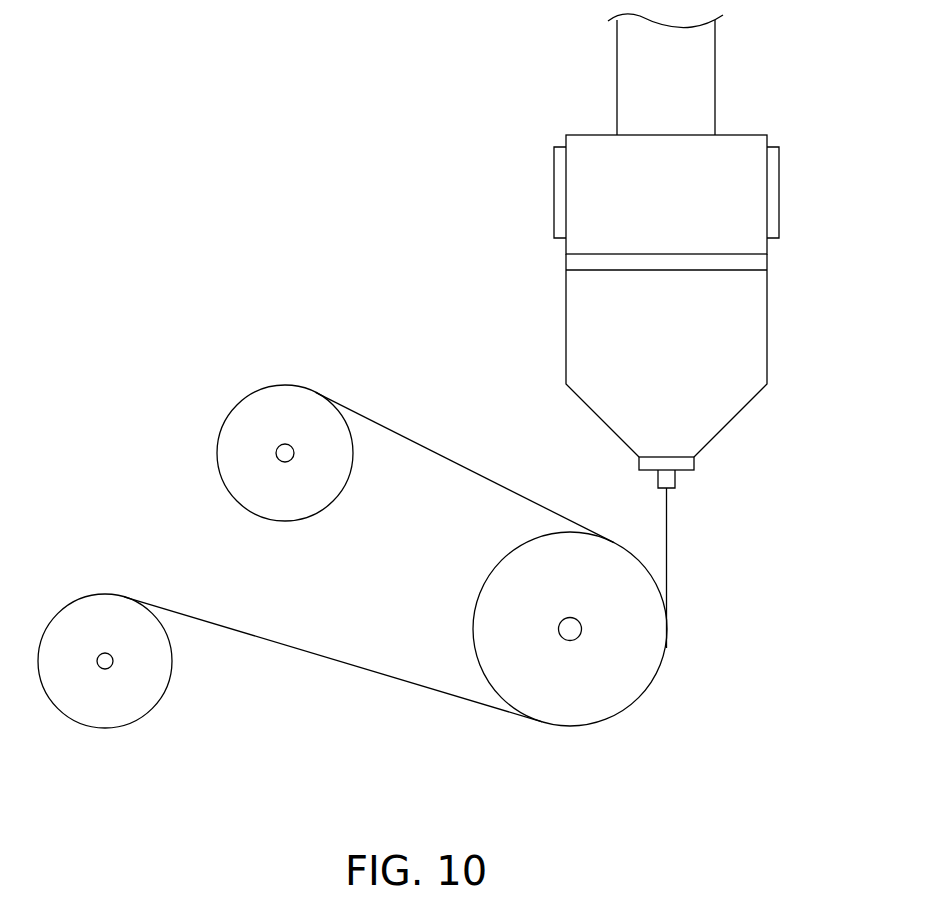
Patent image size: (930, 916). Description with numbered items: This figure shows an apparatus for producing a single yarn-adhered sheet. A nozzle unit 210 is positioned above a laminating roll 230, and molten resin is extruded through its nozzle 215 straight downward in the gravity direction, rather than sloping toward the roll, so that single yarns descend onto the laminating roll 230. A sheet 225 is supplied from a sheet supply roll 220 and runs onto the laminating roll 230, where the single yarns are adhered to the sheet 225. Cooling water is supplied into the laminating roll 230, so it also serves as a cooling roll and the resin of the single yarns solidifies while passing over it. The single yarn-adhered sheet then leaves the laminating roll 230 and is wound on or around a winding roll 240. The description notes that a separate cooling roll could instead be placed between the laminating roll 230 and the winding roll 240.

The nozzle unit 210 is at (757, 316).
The nozzle 215 is at (694, 460).
The sheet supply roll 220 is at (267, 405).
The sheet 225 is at (390, 430).
The laminating roll 230 is at (645, 654).
The winding roll 240 is at (84, 625).